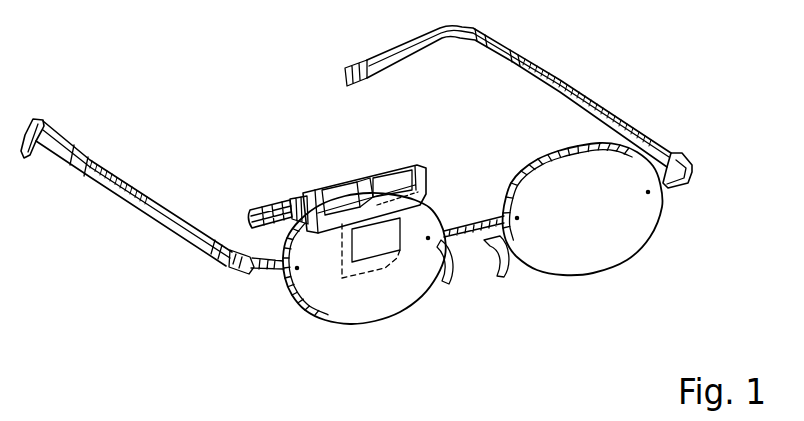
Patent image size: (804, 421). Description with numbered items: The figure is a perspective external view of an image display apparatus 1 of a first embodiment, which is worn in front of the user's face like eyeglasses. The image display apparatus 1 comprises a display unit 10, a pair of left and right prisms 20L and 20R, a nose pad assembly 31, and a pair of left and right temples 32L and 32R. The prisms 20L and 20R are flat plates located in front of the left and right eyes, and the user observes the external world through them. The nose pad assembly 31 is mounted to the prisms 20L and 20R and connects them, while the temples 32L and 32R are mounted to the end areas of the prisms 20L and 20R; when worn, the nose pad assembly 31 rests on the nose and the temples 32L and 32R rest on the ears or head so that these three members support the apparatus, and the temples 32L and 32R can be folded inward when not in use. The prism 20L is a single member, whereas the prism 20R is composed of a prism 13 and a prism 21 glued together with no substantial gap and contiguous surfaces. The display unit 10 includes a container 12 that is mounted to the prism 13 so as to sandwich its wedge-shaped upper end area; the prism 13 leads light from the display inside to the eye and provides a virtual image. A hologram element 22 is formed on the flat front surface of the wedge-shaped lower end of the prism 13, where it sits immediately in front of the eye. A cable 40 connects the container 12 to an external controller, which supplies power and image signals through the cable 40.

The image display apparatus 1 is at (543, 378).
The display unit 10 is at (346, 174).
The container 12 is at (428, 170).
The prism 13 is at (360, 237).
The left prism 20L is at (607, 247).
The right prism 20R is at (318, 285).
The prism 21 is at (352, 312).
The hologram element 22 is at (372, 270).
The nose pad assembly 31 is at (475, 270).
The left temple 32L is at (553, 85).
The right temple 32R is at (138, 195).
The cable 40 is at (258, 203).